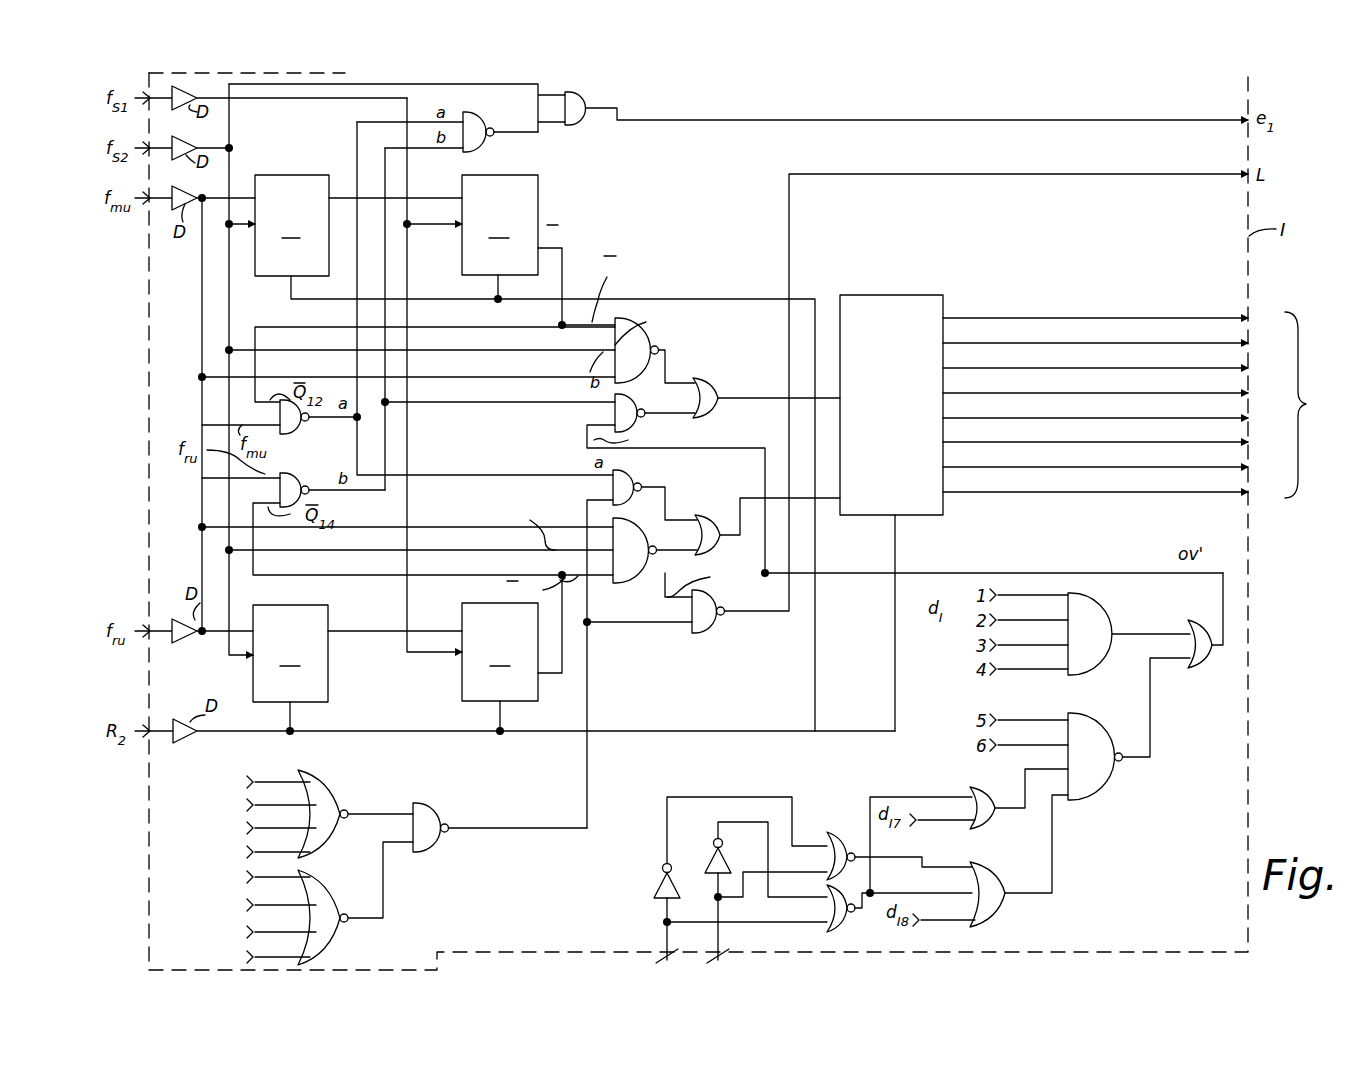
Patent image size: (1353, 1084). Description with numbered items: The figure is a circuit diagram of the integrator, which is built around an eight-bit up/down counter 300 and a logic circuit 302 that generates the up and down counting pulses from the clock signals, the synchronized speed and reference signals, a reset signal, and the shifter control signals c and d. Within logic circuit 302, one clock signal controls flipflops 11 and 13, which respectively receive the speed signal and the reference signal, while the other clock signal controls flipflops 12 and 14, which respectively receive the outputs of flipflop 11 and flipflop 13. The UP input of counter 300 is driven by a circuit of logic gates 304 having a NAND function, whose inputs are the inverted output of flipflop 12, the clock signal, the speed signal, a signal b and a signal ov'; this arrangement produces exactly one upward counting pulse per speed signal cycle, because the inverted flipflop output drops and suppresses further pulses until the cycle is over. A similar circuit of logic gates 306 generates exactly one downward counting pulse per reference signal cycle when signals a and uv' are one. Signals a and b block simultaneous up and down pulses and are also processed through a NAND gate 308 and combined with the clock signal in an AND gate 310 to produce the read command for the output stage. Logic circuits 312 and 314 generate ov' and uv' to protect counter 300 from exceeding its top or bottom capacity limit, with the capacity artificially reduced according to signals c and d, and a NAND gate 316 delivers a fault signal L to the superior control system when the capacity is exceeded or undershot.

The flipflop 11 is at (292, 225).
The flipflop 12 is at (500, 225).
The flipflop 13 is at (290, 653).
The flipflop 14 is at (500, 652).
The up/down counter 300 is at (894, 295).
The logic circuit 302 is at (648, 207).
The circuit of logic gates 304 is at (686, 358).
The circuit of logic gates 306 is at (636, 590).
The NAND gate 308 is at (470, 116).
The AND gate 310 is at (586, 96).
The logic circuit 312 is at (652, 852).
The logic circuit 314 is at (420, 884).
The NAND gate 316 is at (706, 632).